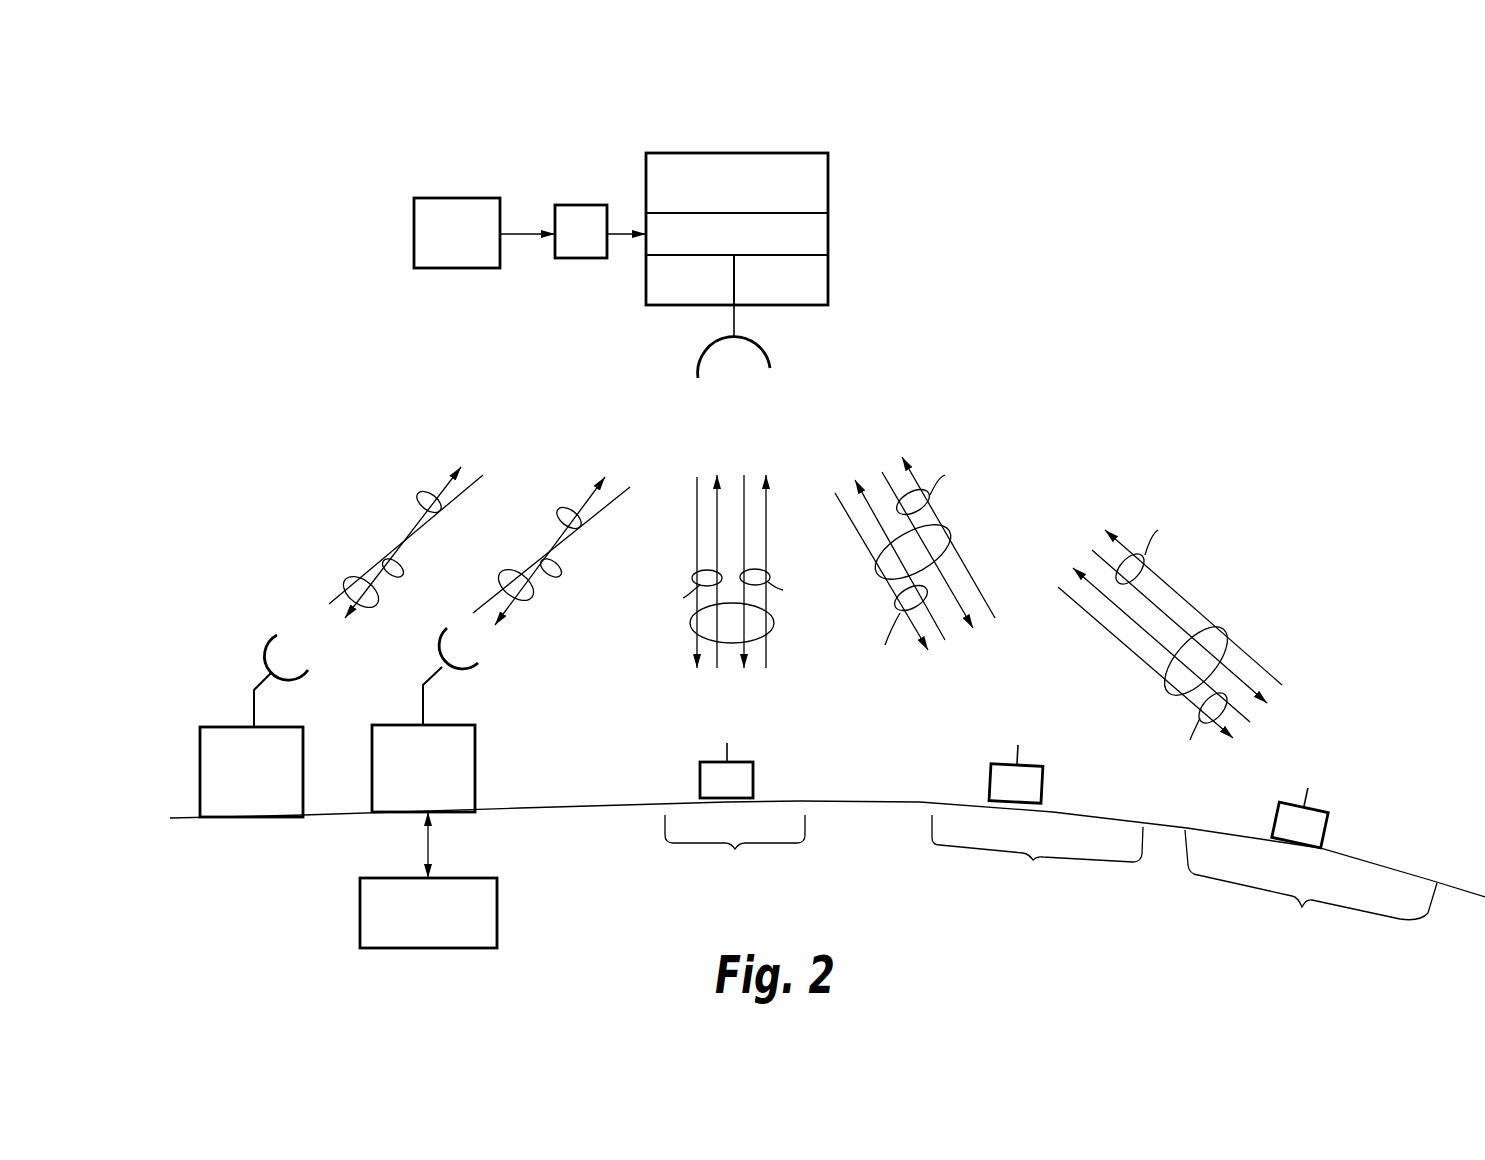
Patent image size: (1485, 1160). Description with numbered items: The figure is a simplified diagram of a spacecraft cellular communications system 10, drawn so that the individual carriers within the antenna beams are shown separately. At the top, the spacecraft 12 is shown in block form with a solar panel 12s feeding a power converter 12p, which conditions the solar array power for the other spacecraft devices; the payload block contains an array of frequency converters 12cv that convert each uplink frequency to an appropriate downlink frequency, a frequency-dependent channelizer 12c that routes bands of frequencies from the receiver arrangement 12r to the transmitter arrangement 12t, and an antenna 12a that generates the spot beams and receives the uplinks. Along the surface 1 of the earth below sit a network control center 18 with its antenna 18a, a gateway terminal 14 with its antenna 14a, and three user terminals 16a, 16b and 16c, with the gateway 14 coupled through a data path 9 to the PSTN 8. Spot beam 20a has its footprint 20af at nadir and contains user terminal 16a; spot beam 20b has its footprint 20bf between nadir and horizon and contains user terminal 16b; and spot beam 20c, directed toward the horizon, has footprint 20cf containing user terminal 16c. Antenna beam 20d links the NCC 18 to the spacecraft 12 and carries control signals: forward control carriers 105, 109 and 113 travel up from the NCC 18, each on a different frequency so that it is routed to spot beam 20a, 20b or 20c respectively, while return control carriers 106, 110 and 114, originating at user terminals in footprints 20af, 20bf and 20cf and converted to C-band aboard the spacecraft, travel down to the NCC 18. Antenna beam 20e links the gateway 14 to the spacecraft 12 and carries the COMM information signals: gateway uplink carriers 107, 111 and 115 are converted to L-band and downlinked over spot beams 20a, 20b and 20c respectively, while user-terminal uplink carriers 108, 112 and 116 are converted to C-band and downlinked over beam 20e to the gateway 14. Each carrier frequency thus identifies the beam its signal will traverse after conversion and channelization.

The surface of the earth 1 is at (592, 805).
The public switched telephone system (PSTN) 8 is at (445, 948).
The data path 9 is at (428, 848).
The spacecraft cellular communications system 10 is at (549, 350).
The spacecraft 12 is at (585, 180).
The solar panel 12s is at (459, 198).
The power converter 12p is at (559, 205).
The frequency converters 12cv is at (828, 190).
The channelizer 12c is at (828, 241).
The transmitter arrangement 12t is at (646, 288).
The receiver arrangement 12r is at (828, 285).
The antenna 12a is at (770, 366).
The gateway terminal 14 is at (392, 725).
The gateway antenna 14a is at (433, 651).
The user terminal 16a is at (753, 778).
The user terminal 16b is at (1042, 790).
The user terminal 16c is at (1328, 833).
The network control center 18 is at (222, 727).
The network control center antenna 18a is at (265, 653).
The spot beam 20a is at (733, 571).
The spot beam 20b is at (909, 564).
The spot beam 20c is at (1167, 643).
The antenna beam 20d is at (343, 590).
The antenna beam 20e is at (530, 598).
The footprint 20af is at (735, 851).
The footprint 20bf is at (1037, 858).
The footprint 20cf is at (1311, 889).
The forward control signal carrier 105 is at (697, 500).
The return control signal carrier 106 is at (717, 537).
The information signal carrier 107 is at (745, 528).
The information signal carrier 108 is at (767, 560).
The forward control signal carrier 109 is at (835, 493).
The return control signal carrier 110 is at (893, 600).
The information signal carrier 111 is at (945, 573).
The information signal carrier 112 is at (992, 605).
The forward control signal carrier 113 is at (1140, 658).
The return control signal carrier 114 is at (1118, 612).
The information signal carrier 115 is at (1180, 625).
The information signal carrier 116 is at (1168, 583).